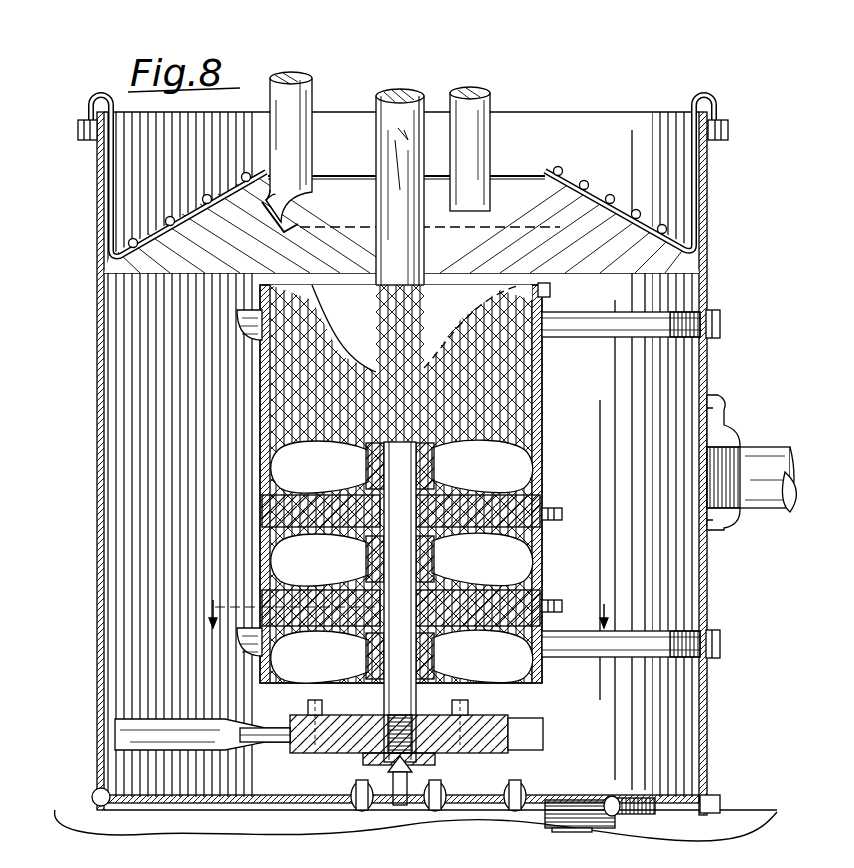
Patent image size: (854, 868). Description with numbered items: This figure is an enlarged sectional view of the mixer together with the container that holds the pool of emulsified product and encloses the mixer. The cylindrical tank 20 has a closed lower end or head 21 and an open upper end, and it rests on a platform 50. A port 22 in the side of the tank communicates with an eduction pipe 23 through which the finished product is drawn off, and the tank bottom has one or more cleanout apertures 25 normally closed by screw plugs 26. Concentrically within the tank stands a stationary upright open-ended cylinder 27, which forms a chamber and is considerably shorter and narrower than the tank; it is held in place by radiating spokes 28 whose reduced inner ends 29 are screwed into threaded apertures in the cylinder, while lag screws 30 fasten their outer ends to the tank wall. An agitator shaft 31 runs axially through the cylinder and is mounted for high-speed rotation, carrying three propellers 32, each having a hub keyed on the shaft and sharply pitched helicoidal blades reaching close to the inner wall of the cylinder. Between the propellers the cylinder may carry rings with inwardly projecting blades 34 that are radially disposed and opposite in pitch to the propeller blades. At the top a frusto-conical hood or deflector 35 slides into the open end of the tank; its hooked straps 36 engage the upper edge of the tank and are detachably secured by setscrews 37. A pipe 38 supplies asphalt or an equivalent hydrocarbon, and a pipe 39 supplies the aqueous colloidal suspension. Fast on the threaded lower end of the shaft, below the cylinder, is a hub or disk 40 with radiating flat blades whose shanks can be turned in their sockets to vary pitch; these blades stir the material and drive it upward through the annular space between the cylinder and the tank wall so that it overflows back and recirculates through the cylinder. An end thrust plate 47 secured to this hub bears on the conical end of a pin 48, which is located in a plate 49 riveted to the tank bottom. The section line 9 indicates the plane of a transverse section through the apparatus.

The section line 9 is at (406, 603).
The cylindrical tank 20 is at (103, 478).
The closed lower end or head 21 is at (262, 812).
The port 22 is at (714, 428).
The eduction pipe 23 is at (775, 505).
The cleanout aperture 25 is at (604, 800).
The screw plug 26 is at (558, 800).
The open end tube or cylinder 27 is at (543, 410).
The radiating spoke 28 is at (600, 337).
The reduced inner end of spoke 29 is at (546, 290).
The lag screw 30 is at (720, 324).
The agitator shaft 31 is at (418, 125).
The propeller 32 is at (402, 561).
The inwardly projecting blade 34 is at (545, 508).
The frusto-conical hood or deflector 35 is at (516, 176).
The hooked strap 36 is at (108, 150).
The setscrew 37 is at (82, 128).
The asphalt supply pipe 38 is at (312, 100).
The aqueous suspension supply pipe 39 is at (486, 105).
The hub or disk 40 is at (300, 745).
The end thrust plate 47 is at (440, 760).
The pin 48 is at (405, 790).
The plate 49 is at (400, 778).
The platform 50 is at (740, 815).